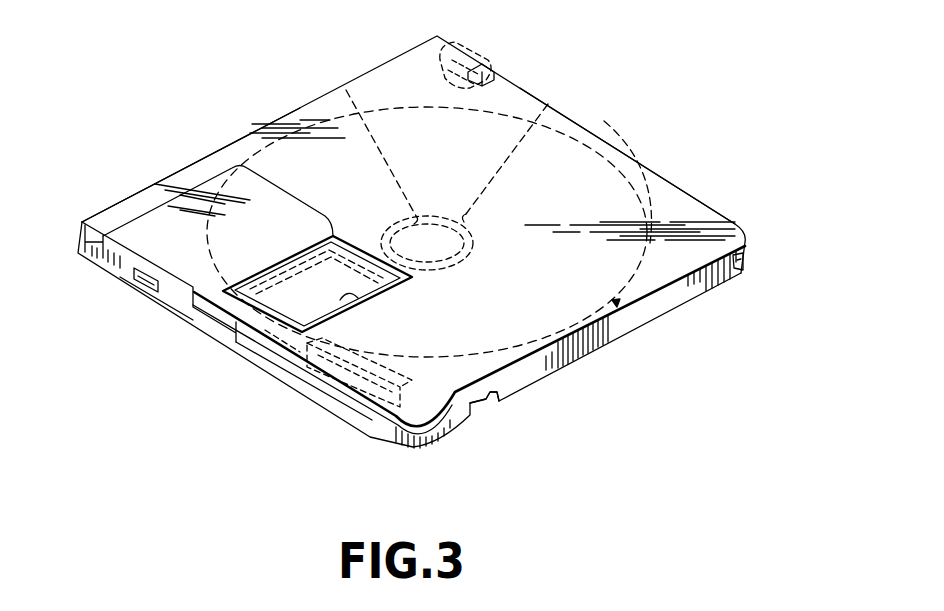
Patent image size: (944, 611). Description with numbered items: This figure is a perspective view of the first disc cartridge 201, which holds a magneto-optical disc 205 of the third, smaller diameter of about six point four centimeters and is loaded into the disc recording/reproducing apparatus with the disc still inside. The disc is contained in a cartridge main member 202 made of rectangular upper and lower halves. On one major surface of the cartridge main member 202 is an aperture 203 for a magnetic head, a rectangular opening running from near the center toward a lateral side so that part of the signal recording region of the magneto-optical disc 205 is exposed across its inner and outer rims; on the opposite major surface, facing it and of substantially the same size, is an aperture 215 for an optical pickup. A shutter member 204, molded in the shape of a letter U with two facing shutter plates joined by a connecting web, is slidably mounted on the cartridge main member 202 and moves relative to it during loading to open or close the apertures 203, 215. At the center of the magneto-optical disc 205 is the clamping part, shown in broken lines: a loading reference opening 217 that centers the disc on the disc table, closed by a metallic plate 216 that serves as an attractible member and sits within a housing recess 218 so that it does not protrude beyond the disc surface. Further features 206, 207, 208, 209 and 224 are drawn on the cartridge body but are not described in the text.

The first disc cartridge 201 is at (233, 96).
The cartridge main member 202 is at (683, 205).
The aperture for magnetic head 203 is at (380, 297).
The shutter member 204 is at (152, 215).
The magneto-optical disc 205 is at (648, 292).
The frame 206 is at (330, 388).
The positioning notch 207 is at (142, 288).
The side wall 208 is at (212, 327).
The notch 209 is at (493, 399).
The aperture for optical pickup 215 is at (275, 322).
The metallic plate 216 is at (345, 88).
The loading reference opening 217 is at (576, 88).
The housing recess 218 is at (606, 138).
The detection hole 224 is at (741, 263).